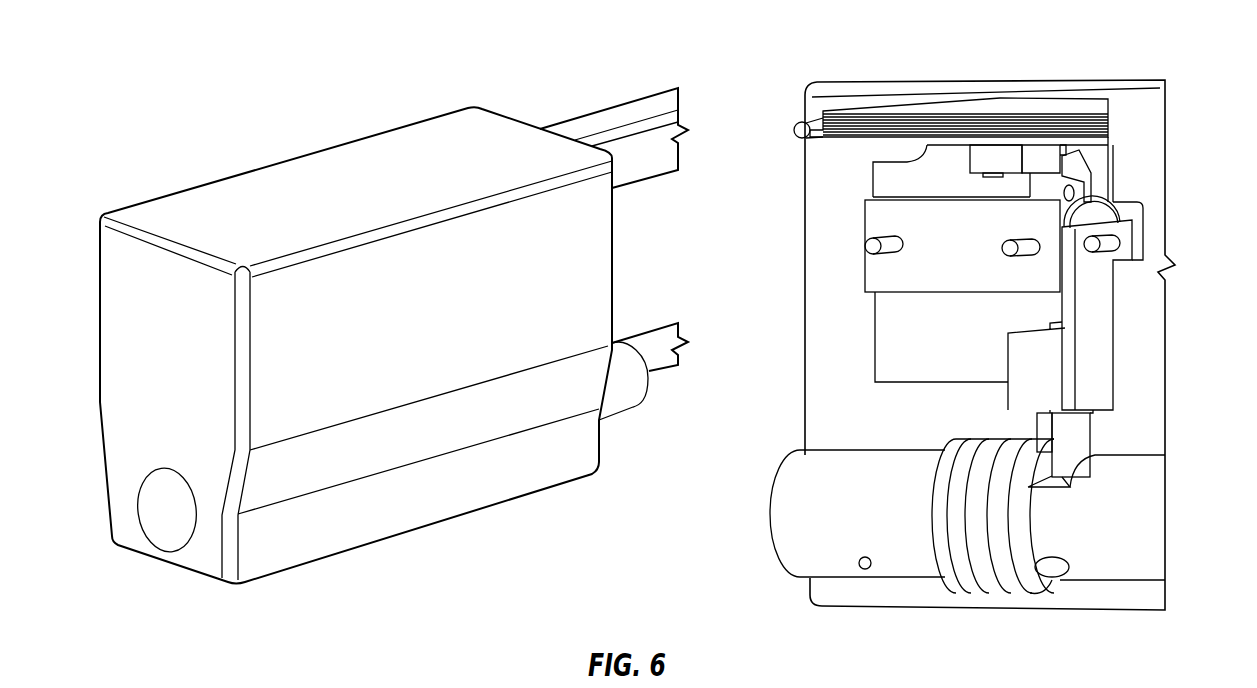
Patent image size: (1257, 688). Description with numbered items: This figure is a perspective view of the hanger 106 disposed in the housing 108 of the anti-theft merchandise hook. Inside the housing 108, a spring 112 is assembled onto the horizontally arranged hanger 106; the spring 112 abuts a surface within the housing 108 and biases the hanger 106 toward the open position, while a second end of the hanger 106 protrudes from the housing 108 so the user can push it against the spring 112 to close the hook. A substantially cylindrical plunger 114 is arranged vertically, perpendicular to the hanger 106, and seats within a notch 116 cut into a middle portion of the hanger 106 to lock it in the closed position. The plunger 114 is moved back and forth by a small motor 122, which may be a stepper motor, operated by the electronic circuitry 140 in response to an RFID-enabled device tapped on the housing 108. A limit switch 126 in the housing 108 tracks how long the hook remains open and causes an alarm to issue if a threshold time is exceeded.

The hanger 106 is at (628, 410).
The housing 108 is at (303, 563).
The spring 112 is at (1027, 577).
The plunger 114 is at (1083, 438).
The notch 116 is at (1048, 489).
The motor 122 is at (903, 268).
The limit switch 126 is at (999, 160).
The electronic circuitry 140 is at (897, 318).